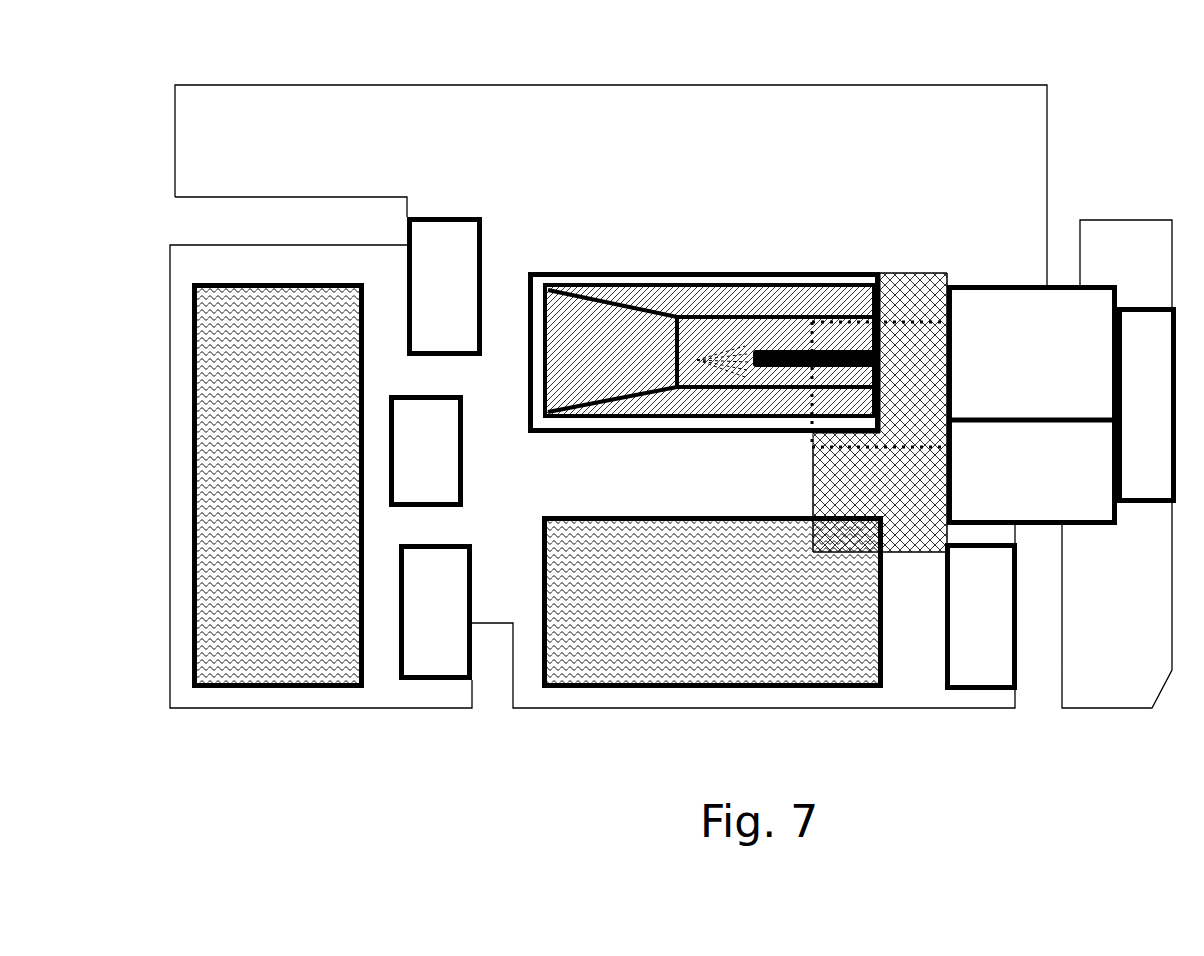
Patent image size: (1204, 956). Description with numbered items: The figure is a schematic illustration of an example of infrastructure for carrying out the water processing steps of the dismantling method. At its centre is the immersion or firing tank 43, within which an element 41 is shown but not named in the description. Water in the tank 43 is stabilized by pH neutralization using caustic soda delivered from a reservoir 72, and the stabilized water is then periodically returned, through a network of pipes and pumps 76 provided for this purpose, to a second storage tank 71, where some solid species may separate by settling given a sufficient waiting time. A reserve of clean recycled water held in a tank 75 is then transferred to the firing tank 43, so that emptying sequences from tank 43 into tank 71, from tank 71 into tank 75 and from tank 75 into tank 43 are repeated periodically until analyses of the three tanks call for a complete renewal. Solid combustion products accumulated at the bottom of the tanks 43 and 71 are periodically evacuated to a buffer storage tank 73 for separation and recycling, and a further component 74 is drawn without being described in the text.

The emitter / radiating element 41 is at (773, 294).
The immersion tank 43 is at (714, 305).
The second storage tank 71 is at (713, 568).
The reservoir 72 is at (463, 237).
The buffer storage tank 73 is at (405, 650).
The electronic component 74 is at (1024, 617).
The tank 75 is at (278, 440).
The network of pipes and pumps 76 is at (466, 453).